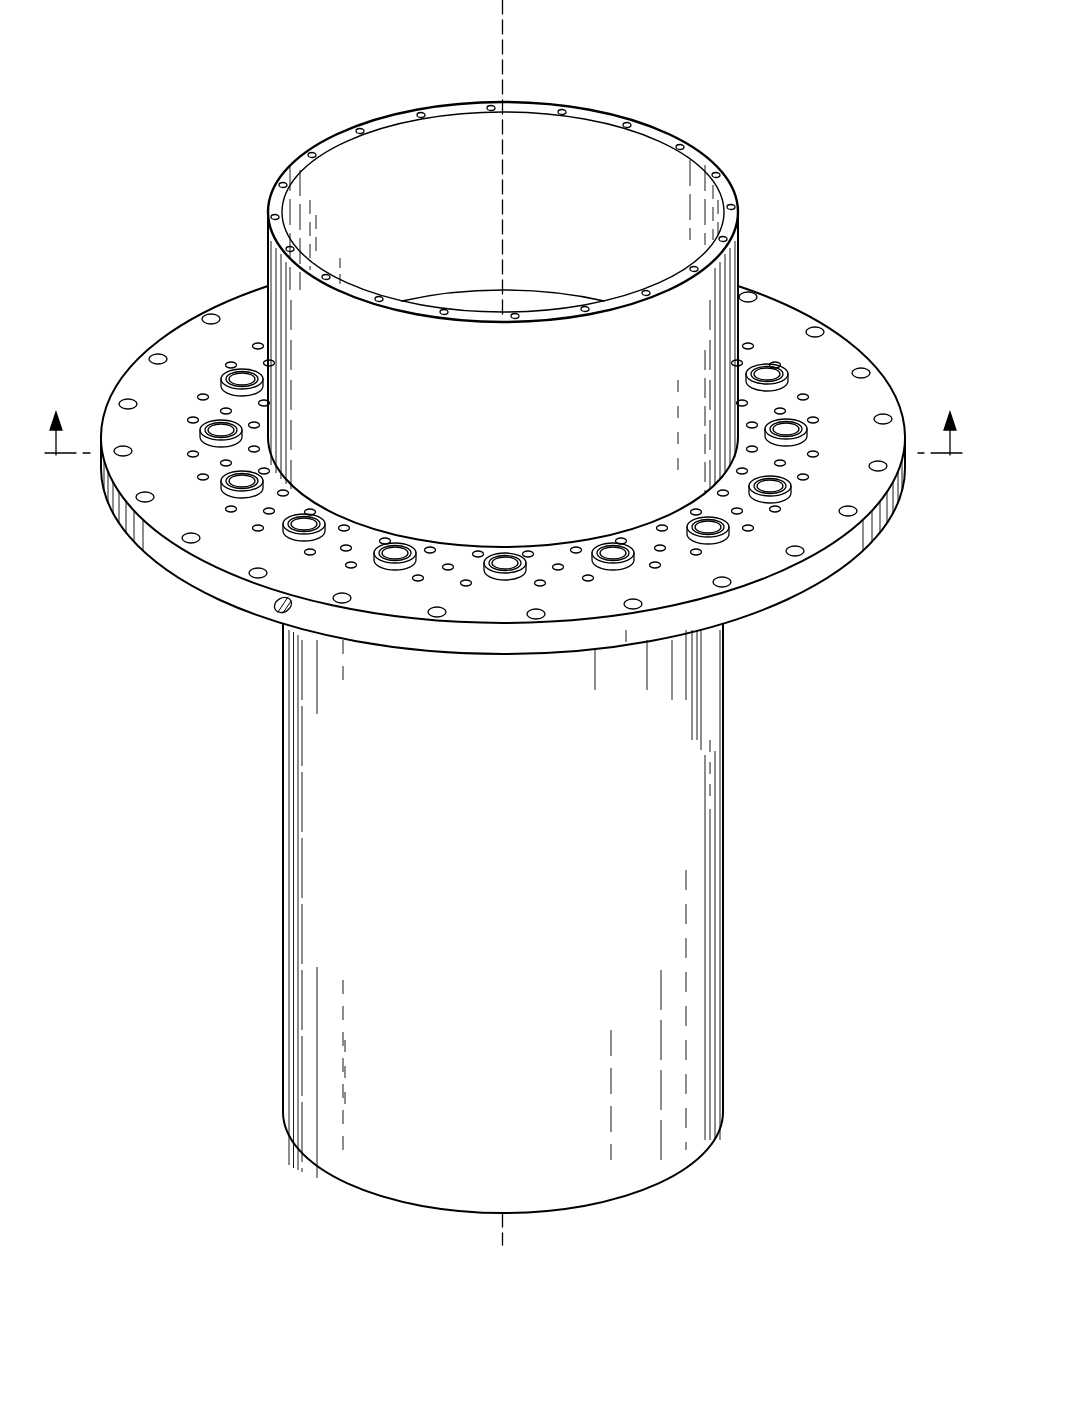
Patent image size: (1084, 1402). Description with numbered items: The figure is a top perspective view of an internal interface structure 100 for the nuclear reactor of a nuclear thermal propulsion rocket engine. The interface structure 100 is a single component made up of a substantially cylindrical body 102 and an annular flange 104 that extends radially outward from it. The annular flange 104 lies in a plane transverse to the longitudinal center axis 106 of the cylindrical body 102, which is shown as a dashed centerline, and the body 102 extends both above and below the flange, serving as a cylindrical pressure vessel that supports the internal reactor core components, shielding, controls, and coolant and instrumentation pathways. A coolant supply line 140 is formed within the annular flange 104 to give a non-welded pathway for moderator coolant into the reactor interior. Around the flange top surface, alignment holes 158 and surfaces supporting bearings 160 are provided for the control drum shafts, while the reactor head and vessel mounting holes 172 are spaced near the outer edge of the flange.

The internal interface structure 100 is at (122, 132).
The cylindrical body 102 is at (256, 990).
The annular flange 104 is at (868, 332).
The longitudinal center axis 106 is at (503, 62).
The coolant supply line 140 is at (270, 624).
The alignment hole 158 is at (220, 388).
The bearing 160 is at (266, 536).
The reactor head/vessel mounting hole 172 is at (214, 313).